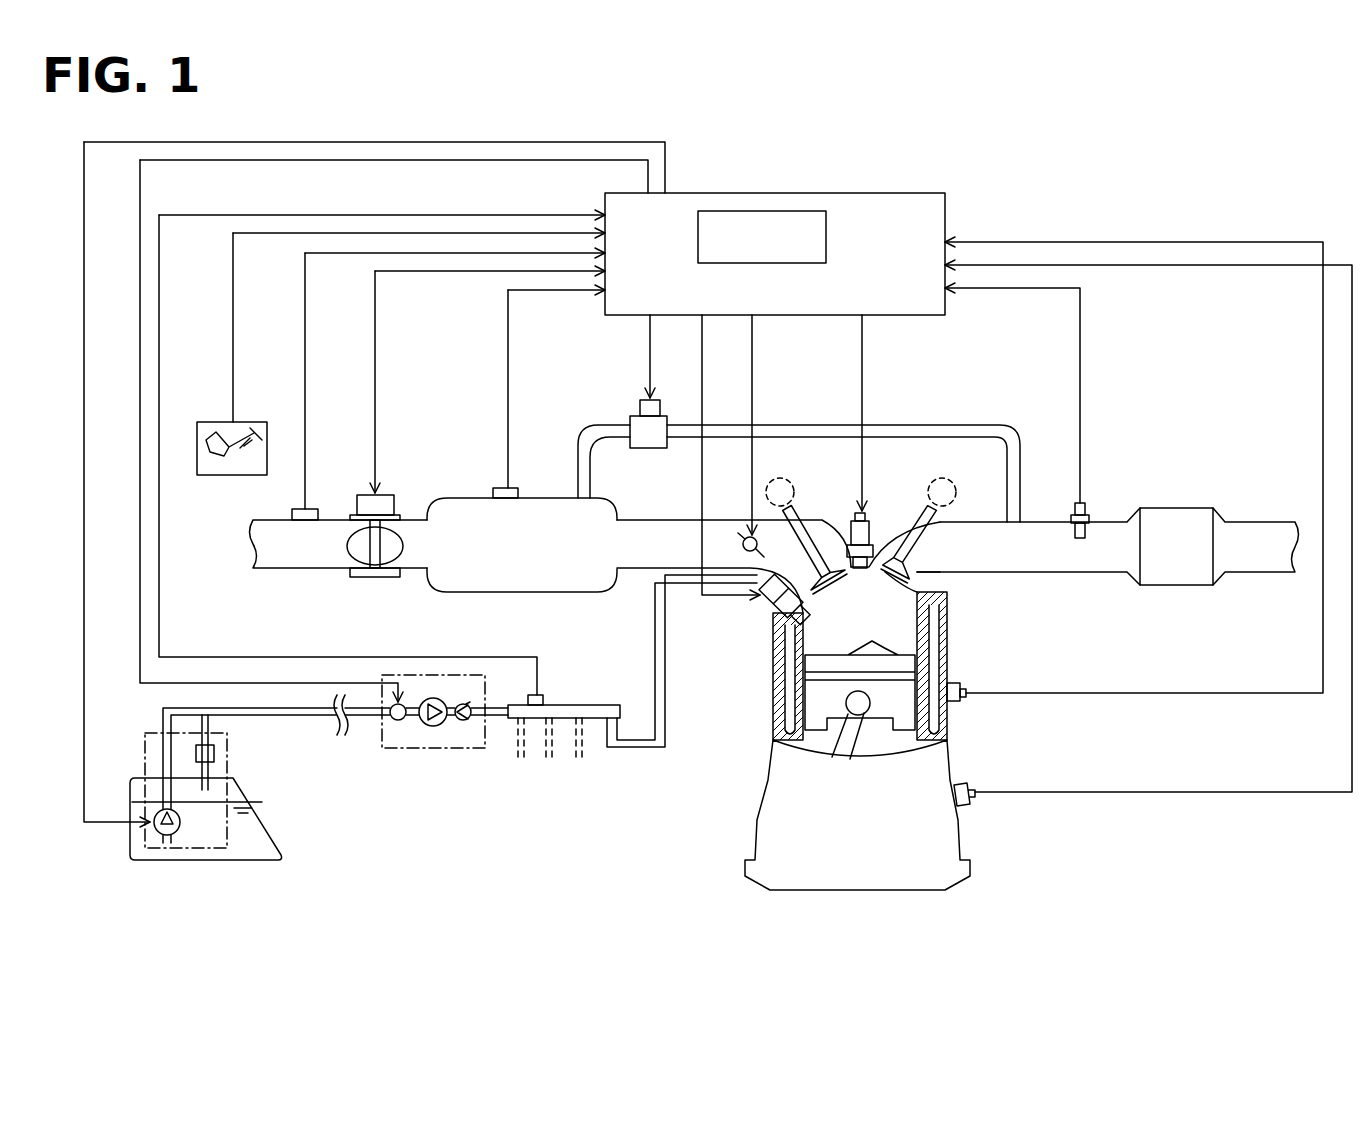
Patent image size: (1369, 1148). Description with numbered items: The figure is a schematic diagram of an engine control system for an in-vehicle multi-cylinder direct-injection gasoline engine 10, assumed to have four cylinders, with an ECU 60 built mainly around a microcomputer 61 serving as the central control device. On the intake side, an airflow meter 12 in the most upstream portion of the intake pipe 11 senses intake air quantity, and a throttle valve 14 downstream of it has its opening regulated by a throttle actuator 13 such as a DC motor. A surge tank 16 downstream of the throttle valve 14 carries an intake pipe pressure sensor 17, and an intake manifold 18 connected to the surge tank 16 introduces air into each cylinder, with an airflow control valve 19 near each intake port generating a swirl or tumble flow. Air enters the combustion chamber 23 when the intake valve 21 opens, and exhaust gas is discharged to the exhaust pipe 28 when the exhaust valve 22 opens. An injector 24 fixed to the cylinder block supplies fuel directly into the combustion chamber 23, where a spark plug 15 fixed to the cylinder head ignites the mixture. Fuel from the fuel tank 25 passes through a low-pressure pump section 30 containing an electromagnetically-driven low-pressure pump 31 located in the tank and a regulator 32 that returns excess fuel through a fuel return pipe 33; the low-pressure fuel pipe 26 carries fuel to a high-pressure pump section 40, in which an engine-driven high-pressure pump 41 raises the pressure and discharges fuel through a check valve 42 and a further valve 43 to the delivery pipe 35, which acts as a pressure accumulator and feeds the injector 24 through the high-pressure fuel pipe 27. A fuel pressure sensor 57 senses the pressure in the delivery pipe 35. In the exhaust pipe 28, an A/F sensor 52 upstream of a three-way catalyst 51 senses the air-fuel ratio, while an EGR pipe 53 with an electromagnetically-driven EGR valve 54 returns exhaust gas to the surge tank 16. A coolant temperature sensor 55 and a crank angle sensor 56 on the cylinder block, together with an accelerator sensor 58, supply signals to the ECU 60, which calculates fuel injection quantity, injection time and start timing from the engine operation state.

The engine 10 is at (970, 388).
The intake pipe 11 is at (318, 568).
The airflow meter 12 is at (310, 509).
The throttle actuator 13 is at (390, 495).
The throttle valve 14 is at (398, 560).
The spark plug 15 is at (870, 520).
The surge tank 16 is at (455, 498).
The intake pipe pressure sensor 17 is at (515, 488).
The intake manifold 18 is at (645, 520).
The airflow control valve 19 is at (744, 535).
The intake valve 21 is at (838, 562).
The exhaust valve 22 is at (935, 590).
The combustion chamber 23 is at (905, 630).
The injector 24 is at (772, 612).
The fuel tank 25 is at (232, 860).
The low-pressure fuel pipe 26 is at (163, 708).
The high-pressure fuel pipe 27 is at (640, 747).
The exhaust pipe 28 is at (1080, 572).
The low-pressure pump section 30 is at (145, 760).
The low-pressure pump 31 is at (165, 835).
The regulator 32 is at (214, 752).
The fuel return pipe 33 is at (210, 765).
The delivery pipe 35 is at (605, 705).
The high-pressure pump section 40 is at (382, 748).
The high-pressure pump 41 is at (433, 726).
The check valve 42 is at (468, 722).
The metering valve 43 is at (395, 720).
The catalyst 51 is at (1190, 508).
The A/F sensor 52 is at (1086, 512).
The EGR pipe 53 is at (876, 427).
The EGR valve 54 is at (630, 416).
The coolant temperature sensor 55 is at (965, 702).
The crank angle sensor 56 is at (968, 782).
The fuel pressure sensor 57 is at (540, 695).
The accelerator sensor 58 is at (250, 422).
The ECU 60 is at (948, 197).
The microcomputer 61 is at (828, 237).